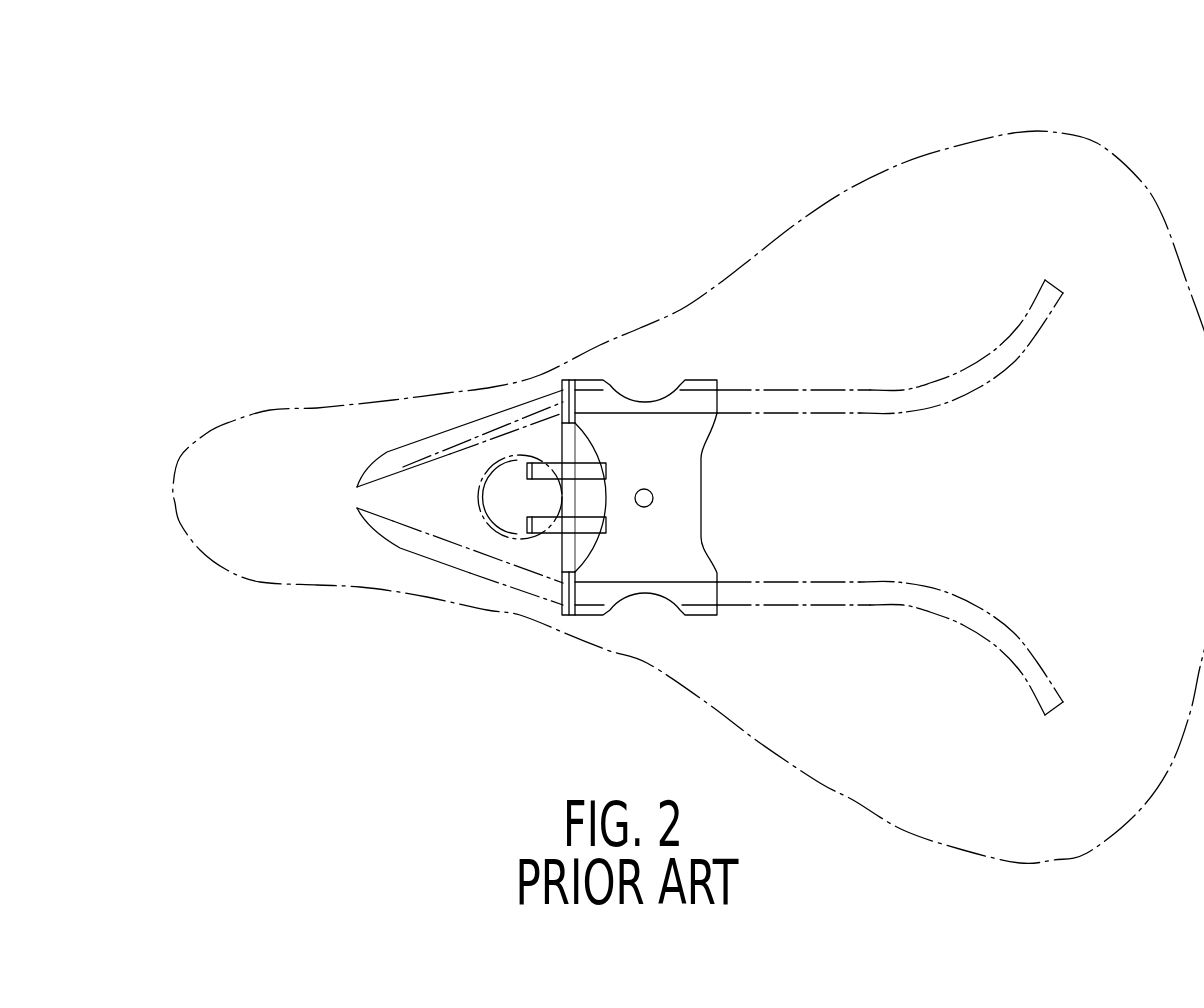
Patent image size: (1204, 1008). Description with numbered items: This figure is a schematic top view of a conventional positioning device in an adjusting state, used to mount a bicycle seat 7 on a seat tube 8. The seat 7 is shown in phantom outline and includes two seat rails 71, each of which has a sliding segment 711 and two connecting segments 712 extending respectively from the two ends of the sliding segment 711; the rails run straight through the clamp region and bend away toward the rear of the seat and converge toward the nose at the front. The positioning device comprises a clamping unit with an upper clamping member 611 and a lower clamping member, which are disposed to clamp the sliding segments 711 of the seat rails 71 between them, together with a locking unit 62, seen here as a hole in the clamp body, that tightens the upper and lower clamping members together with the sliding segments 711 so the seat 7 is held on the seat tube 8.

The seat 7 is at (746, 263).
The seat rail 71 is at (404, 449).
The sliding segment 711 is at (800, 402).
The connecting segment 712 is at (983, 373).
The seat tube 8 is at (480, 470).
The upper clamping member 611 is at (588, 383).
The locking unit 62 is at (647, 487).